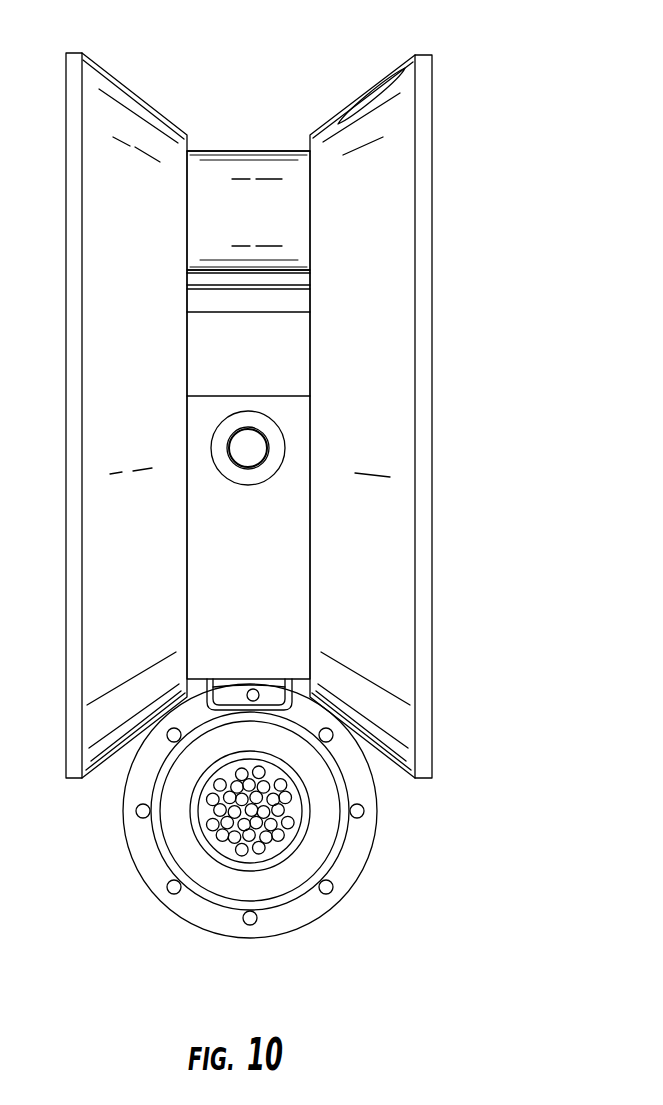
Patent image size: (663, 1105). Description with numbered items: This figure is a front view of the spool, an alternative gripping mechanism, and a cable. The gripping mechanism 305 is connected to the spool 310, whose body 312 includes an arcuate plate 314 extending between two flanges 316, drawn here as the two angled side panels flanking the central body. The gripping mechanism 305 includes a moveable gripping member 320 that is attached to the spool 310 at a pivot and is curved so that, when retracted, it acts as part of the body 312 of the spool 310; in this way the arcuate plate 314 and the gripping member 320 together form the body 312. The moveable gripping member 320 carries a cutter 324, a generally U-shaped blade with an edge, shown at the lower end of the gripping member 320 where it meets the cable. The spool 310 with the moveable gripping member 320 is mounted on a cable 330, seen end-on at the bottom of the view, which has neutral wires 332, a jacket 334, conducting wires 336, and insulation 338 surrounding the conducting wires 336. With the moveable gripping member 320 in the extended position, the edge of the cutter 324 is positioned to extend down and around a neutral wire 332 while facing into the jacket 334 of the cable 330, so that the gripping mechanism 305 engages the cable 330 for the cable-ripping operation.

The gripping mechanism 305 is at (272, 368).
The spool 310 is at (432, 162).
The body 312 is at (269, 139).
The arcuate plate 314 is at (229, 151).
The flanges 316 is at (97, 110).
The moveable gripping member 320 is at (210, 394).
The cutter 324 is at (200, 692).
The cable 330 is at (338, 908).
The neutral wires 332 is at (361, 814).
The jacket 334 is at (295, 908).
The conducting wires 336 is at (215, 826).
The insulation 338 is at (210, 872).